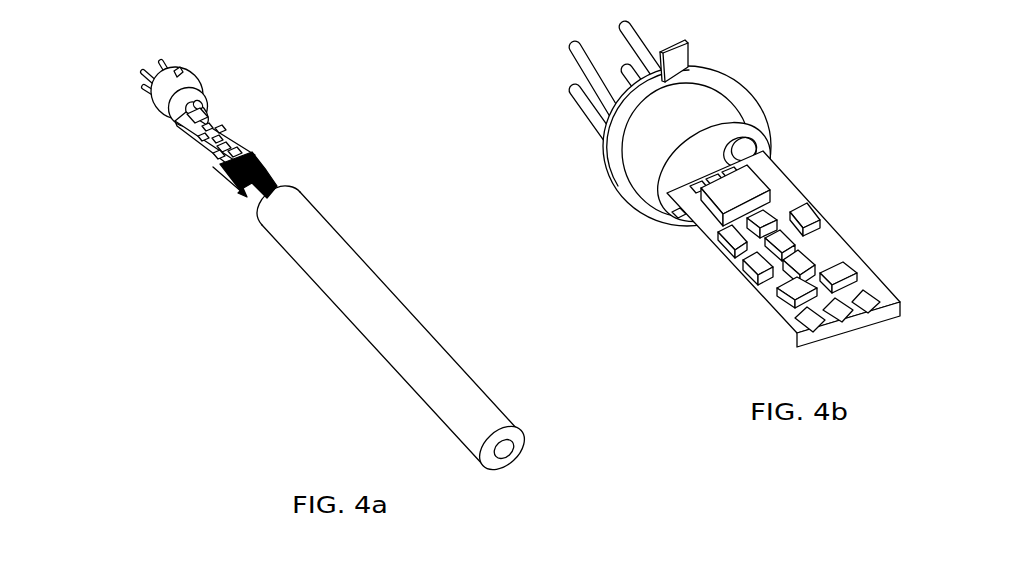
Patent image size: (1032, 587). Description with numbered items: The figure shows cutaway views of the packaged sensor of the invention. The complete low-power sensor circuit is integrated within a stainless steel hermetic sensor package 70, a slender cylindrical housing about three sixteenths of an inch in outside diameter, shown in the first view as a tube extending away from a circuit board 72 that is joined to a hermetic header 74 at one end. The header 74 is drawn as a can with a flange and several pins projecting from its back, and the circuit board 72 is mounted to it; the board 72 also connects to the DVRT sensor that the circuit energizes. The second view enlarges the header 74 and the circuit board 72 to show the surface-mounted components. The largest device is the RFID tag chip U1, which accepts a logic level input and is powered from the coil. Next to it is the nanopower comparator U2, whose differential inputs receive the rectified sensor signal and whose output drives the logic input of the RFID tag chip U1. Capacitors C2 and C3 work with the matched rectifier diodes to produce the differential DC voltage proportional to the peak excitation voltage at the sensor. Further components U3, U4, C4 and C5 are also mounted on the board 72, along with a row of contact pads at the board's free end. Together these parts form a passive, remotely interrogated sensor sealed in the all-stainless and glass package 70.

In FIG. 4A, the hermetic sensor package 70 is at (455, 418).
In FIG. 4A, the circuit board 72 is at (263, 127).
In FIG. 4B, the circuit board 72 is at (823, 335).
In FIG. 4A, the hermetic header 74 is at (165, 103).
In FIG. 4B, the hermetic header 74 is at (643, 148).
In FIG. 4B, the RFID tag chip U1 is at (755, 187).
In FIG. 4B, the nanopower comparator U2 is at (775, 205).
In FIG. 4B, the integrated circuit U3 is at (800, 235).
In FIG. 4B, the integrated circuit U4 is at (785, 252).
In FIG. 4B, the capacitor C2 is at (680, 222).
In FIG. 4B, the capacitor C3 is at (807, 212).
In FIG. 4B, the capacitor C4 is at (732, 258).
In FIG. 4B, the capacitor C5 is at (750, 287).